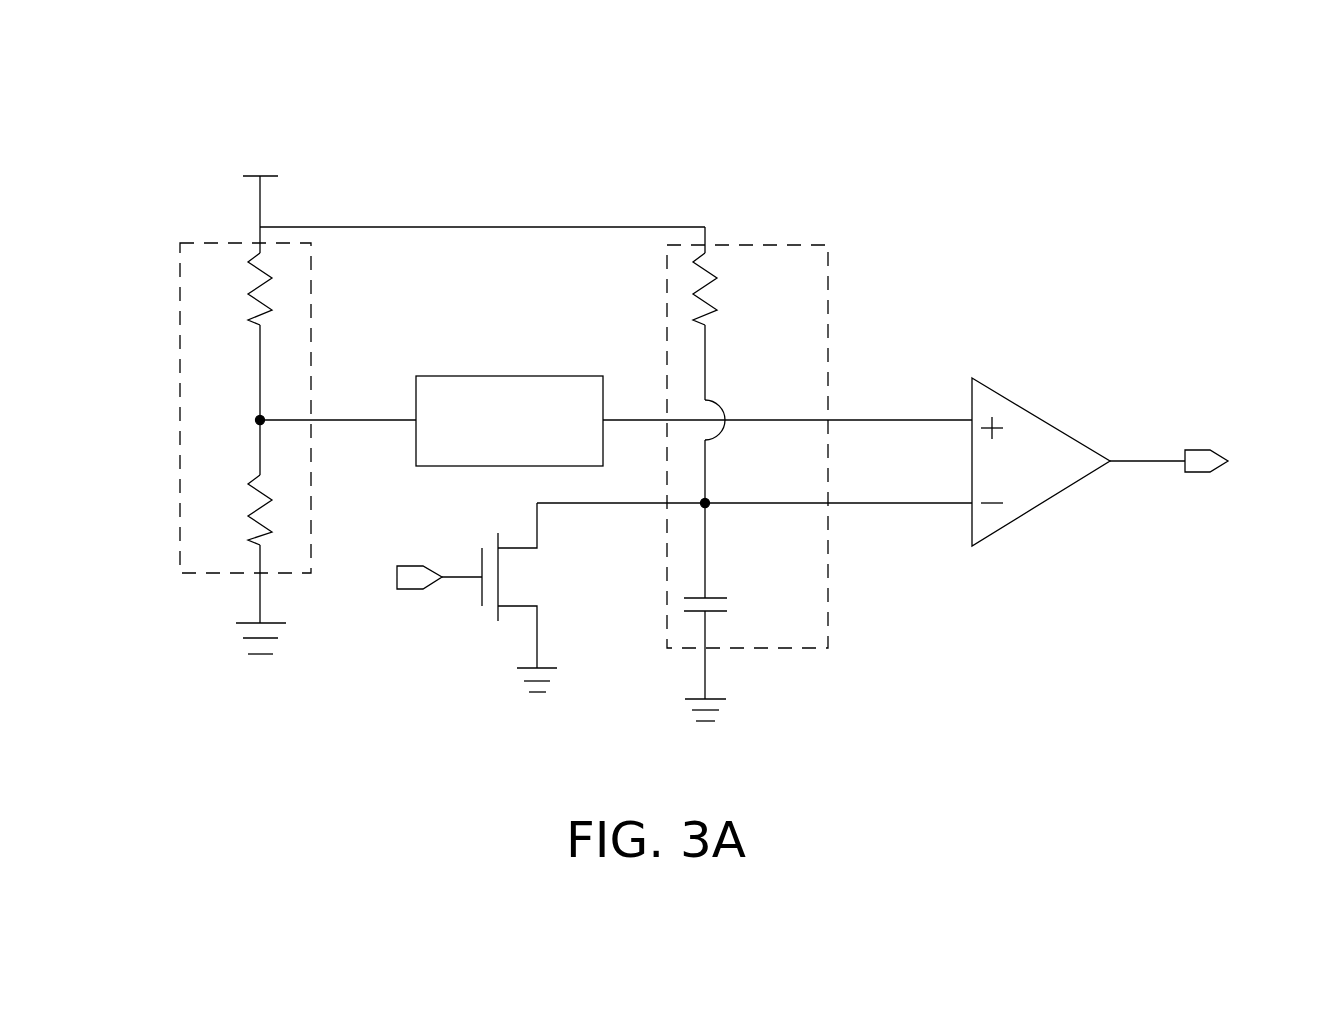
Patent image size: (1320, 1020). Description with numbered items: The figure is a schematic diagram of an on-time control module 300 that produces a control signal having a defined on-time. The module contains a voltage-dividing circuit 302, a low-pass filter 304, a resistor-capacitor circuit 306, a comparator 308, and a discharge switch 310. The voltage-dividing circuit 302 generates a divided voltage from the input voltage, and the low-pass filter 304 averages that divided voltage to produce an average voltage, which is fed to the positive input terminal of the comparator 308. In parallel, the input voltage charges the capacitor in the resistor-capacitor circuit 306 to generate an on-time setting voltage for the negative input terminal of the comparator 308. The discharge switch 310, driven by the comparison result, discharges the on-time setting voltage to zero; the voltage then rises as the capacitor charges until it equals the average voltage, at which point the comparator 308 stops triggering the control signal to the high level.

The on-time control module 300 is at (1137, 150).
The voltage-dividing circuit 302 is at (180, 394).
The low-pass filter 304 is at (508, 376).
The resistor-capacitor circuit 306 is at (821, 245).
The comparator 308 is at (1042, 418).
The discharge switch 310 is at (553, 582).